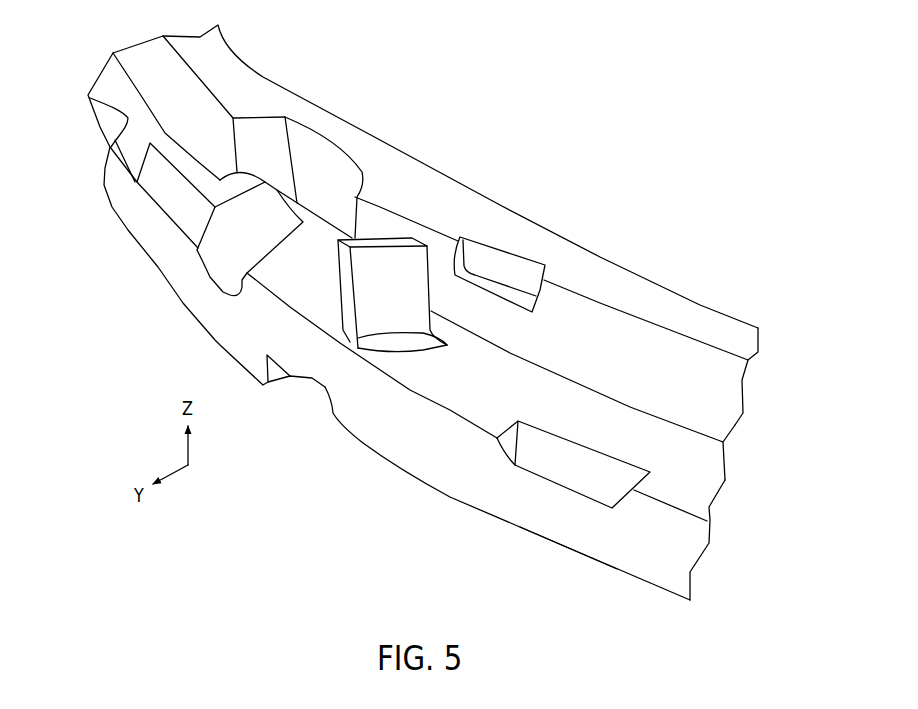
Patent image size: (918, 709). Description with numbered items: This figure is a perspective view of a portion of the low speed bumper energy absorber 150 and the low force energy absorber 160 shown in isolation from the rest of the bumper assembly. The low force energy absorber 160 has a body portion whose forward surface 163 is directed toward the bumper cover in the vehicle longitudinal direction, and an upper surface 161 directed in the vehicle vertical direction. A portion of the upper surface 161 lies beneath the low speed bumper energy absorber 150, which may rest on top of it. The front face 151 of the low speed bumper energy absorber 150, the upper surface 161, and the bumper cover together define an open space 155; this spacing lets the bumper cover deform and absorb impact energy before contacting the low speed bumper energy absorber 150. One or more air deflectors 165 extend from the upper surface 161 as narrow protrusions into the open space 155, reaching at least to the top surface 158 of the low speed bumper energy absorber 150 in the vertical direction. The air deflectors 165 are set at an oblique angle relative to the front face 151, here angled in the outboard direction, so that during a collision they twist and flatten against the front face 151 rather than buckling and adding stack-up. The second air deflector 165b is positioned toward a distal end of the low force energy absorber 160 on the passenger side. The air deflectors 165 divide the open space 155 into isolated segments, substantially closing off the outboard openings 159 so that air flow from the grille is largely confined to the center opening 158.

The low speed bumper energy absorber 150 is at (508, 195).
The front face 151 is at (727, 390).
The open space 155 is at (718, 432).
The center opening 158 is at (708, 464).
The outboard openings 159 is at (132, 141).
The low force energy absorber 160 is at (377, 478).
The upper surface 161 is at (283, 262).
The forward surface 163 is at (572, 535).
The air deflectors 165 is at (337, 351).
The second air deflector 165b is at (336, 313).